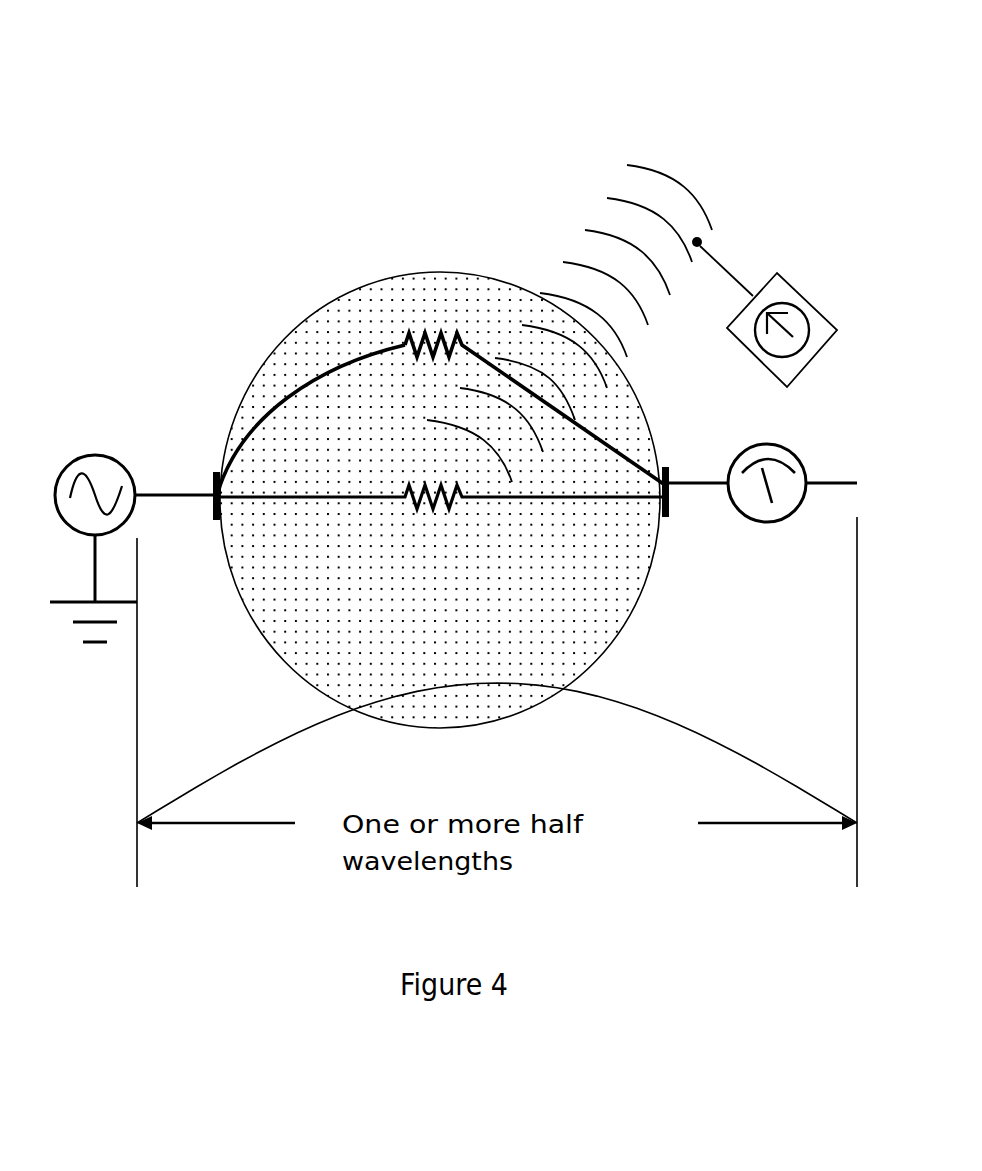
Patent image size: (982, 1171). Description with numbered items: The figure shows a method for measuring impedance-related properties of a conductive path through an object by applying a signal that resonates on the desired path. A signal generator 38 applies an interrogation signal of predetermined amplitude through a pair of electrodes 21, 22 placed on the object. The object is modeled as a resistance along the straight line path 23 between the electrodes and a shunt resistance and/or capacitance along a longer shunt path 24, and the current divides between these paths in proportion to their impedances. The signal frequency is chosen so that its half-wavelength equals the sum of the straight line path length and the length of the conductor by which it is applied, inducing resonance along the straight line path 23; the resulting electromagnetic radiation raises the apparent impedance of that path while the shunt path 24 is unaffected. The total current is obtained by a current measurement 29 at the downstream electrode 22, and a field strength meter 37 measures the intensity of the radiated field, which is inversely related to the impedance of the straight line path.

The electrode 21 is at (224, 514).
The downstream electrode 22 is at (669, 500).
The straight line path 23 is at (488, 499).
The shunt path 24 is at (283, 397).
The current measurement 29 is at (795, 446).
The field strength meter 37 is at (793, 297).
The signal generator 38 is at (108, 545).